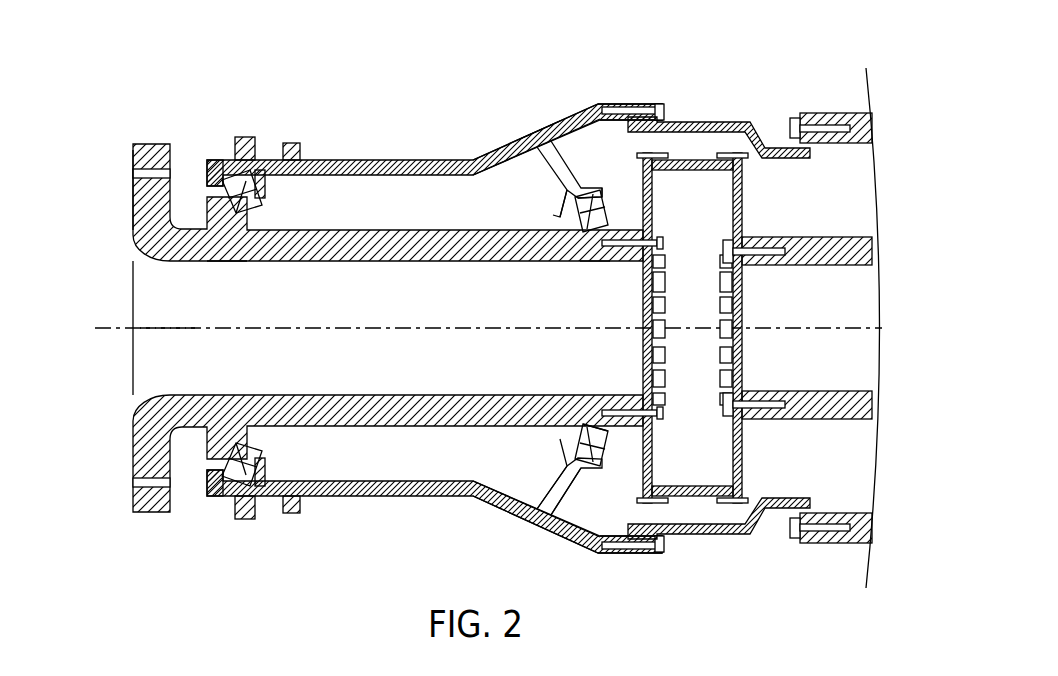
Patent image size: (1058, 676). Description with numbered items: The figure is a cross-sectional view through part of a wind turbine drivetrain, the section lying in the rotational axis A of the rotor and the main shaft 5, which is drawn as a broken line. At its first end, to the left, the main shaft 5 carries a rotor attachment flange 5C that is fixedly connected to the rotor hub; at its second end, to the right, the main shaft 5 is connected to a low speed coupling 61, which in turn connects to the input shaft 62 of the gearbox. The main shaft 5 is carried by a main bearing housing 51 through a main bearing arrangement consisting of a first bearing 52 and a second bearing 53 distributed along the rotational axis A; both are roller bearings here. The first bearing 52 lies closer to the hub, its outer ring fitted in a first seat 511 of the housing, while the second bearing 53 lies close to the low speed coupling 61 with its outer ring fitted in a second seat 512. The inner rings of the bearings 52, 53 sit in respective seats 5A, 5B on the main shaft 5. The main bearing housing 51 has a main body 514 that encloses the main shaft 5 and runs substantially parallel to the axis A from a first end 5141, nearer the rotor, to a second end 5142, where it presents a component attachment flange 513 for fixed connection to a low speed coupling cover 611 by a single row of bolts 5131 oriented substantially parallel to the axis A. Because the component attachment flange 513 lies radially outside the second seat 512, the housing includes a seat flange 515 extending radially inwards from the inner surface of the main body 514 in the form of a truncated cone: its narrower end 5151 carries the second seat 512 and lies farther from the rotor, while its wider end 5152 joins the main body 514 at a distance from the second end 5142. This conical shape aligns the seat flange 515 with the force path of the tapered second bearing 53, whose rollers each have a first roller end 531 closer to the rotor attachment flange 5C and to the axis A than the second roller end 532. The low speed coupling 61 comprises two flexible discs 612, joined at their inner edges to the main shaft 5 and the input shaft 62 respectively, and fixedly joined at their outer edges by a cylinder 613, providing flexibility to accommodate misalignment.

The main shaft 5 is at (147, 382).
The seat 5A is at (256, 263).
The seat 5B is at (595, 263).
The rotor attachment flange 5C is at (133, 203).
The rotational axis A is at (170, 325).
The main bearing housing 51 is at (352, 160).
The first seat 511 is at (259, 170).
The second seat 512 is at (587, 192).
The component attachment flange 513 is at (610, 103).
The bolts 5131 is at (665, 108).
The main body 514 is at (430, 162).
The first end 5141 is at (213, 158).
The second end 5142 is at (630, 106).
The seat flange 515 is at (553, 170).
The narrower end 5151 is at (578, 178).
The wider end 5152 is at (532, 134).
The first bearing 52 is at (257, 198).
The second bearing 53 is at (598, 212).
The first roller end 531 is at (557, 443).
The second roller end 532 is at (600, 450).
The low speed coupling 61 is at (694, 160).
The low speed coupling cover 611 is at (752, 121).
The flexible discs 612 is at (746, 198).
The cylinder 613 is at (683, 172).
The input shaft 62 is at (808, 237).